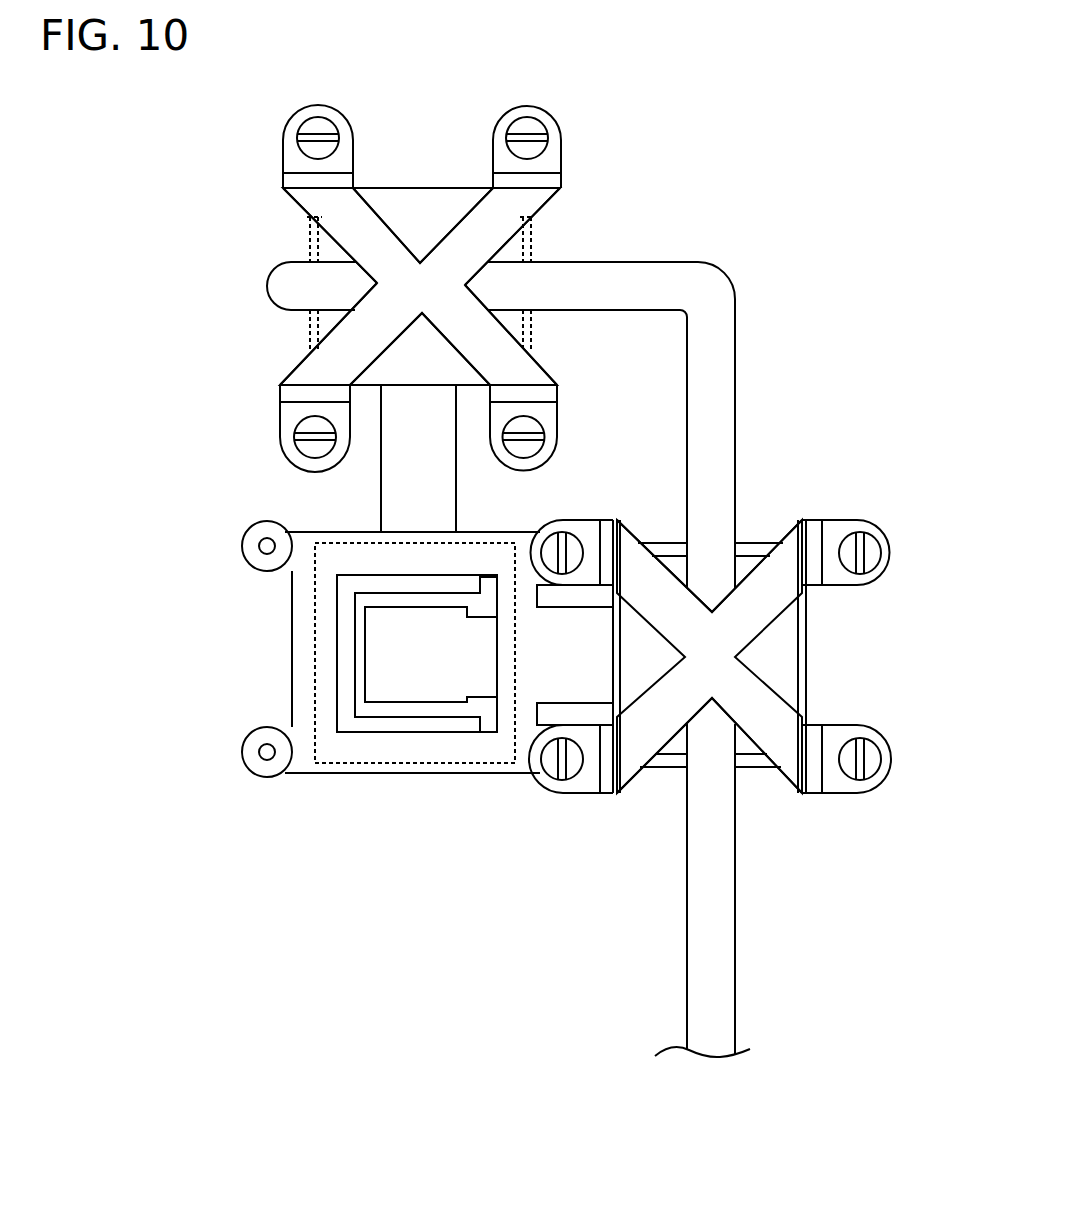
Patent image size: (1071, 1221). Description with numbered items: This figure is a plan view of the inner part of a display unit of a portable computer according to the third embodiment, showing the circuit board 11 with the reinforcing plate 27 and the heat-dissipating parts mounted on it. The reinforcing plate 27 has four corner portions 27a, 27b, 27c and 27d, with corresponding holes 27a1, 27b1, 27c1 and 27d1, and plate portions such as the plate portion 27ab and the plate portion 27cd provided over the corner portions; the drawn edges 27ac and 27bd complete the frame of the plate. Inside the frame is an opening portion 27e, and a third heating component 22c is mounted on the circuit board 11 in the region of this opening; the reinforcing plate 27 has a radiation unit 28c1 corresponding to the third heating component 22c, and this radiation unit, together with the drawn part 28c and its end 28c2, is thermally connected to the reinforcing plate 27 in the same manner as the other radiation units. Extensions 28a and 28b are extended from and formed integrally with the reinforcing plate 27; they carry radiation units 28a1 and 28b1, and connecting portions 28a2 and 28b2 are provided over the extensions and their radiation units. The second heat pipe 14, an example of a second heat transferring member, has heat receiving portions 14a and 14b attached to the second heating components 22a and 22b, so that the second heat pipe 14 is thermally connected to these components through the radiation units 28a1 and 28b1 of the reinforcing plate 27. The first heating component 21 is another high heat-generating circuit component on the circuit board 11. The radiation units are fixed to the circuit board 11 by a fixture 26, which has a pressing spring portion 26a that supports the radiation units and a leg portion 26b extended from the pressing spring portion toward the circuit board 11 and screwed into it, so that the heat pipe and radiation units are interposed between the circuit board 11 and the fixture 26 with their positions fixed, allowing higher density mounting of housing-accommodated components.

The circuit board 11 is at (572, 1033).
The second heat pipe 14 is at (734, 337).
The heat receiving portion 14a is at (712, 747).
The heat receiving portion 14b is at (310, 277).
The first heating component 21 is at (363, 775).
The second heating component 22a is at (802, 655).
The second heating component 22b is at (438, 188).
The third heating component 22c is at (340, 617).
The fixture 26 is at (520, 212).
The pressing spring portion 26a is at (337, 350).
The leg portion 26b is at (547, 187).
The reinforcing plate 27 is at (393, 847).
The corner portion 27a is at (245, 578).
The hole 27a1 is at (262, 545).
The plate portion 27ab is at (367, 565).
The left edge 27ac is at (300, 700).
The corner portion 27b is at (573, 537).
The hole 27b1 is at (552, 542).
The right edge 27bd is at (528, 682).
The corner portion 27c is at (242, 775).
The hole 27c1 is at (262, 752).
The plate portion 27cd is at (423, 748).
The corner portion 27d is at (540, 795).
The hole 27d1 is at (555, 764).
The opening portion 27e is at (450, 740).
The extension 28a is at (636, 827).
The radiation unit 28a1 is at (783, 625).
The connecting portion 28a2 is at (570, 660).
The extension 28b is at (570, 375).
The radiation unit 28b1 is at (540, 343).
The connecting portion 28b2 is at (407, 502).
The bracket fixing portion 28c is at (371, 662).
The radiation unit 28c1 is at (437, 640).
The lower tab 28c2 is at (492, 653).